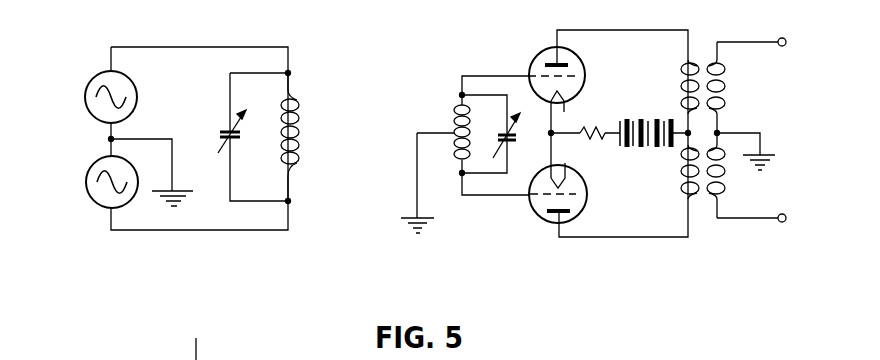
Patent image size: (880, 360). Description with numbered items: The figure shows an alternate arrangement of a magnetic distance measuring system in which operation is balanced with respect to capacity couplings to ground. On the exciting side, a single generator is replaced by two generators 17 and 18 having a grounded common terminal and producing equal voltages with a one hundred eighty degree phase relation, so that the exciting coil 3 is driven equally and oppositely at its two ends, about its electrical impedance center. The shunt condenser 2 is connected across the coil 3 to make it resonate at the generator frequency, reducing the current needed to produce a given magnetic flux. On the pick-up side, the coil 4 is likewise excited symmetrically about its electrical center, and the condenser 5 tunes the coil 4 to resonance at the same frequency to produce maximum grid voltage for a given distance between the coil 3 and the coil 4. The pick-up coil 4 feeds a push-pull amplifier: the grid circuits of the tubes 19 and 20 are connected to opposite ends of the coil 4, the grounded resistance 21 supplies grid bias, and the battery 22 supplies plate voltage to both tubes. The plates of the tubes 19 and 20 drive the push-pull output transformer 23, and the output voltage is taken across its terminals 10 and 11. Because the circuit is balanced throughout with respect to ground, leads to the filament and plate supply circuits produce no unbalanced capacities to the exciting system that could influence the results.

The condenser 2 is at (226, 129).
The coil 3 is at (300, 128).
The coil 4 is at (455, 116).
The condenser 5 is at (508, 139).
The terminal 10 is at (780, 46).
The terminal 11 is at (787, 196).
The generator 17 is at (84, 99).
The generator 18 is at (85, 188).
The tube 19 is at (584, 66).
The tube 20 is at (586, 204).
The resistance 21 is at (601, 128).
The battery 22 is at (632, 118).
The push-pull output transformer 23 is at (703, 57).